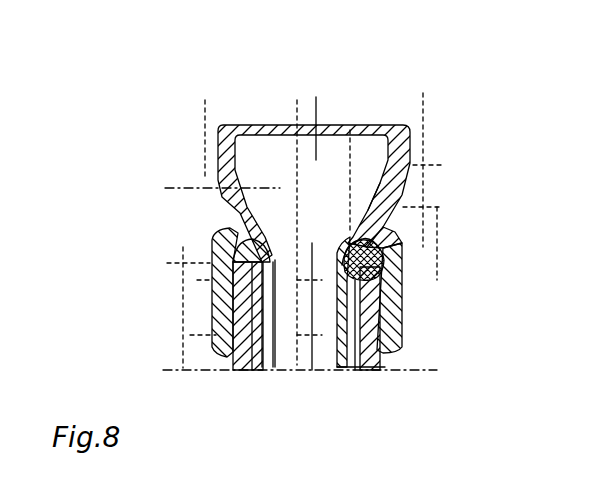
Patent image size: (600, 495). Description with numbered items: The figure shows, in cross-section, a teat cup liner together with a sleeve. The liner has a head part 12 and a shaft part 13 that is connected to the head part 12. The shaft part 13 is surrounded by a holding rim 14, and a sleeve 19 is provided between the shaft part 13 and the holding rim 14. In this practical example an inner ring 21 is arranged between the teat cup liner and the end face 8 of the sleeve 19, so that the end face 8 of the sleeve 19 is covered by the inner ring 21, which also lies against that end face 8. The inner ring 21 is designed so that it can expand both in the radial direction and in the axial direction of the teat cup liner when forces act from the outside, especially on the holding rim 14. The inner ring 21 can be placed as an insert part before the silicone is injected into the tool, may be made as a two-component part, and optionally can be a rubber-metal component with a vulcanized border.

The head part 12 is at (412, 138).
The inner ring 21 is at (380, 237).
The end face 8 is at (360, 267).
The holding rim 14 is at (398, 325).
The shaft part 13 is at (337, 370).
The sleeve 19 is at (358, 371).